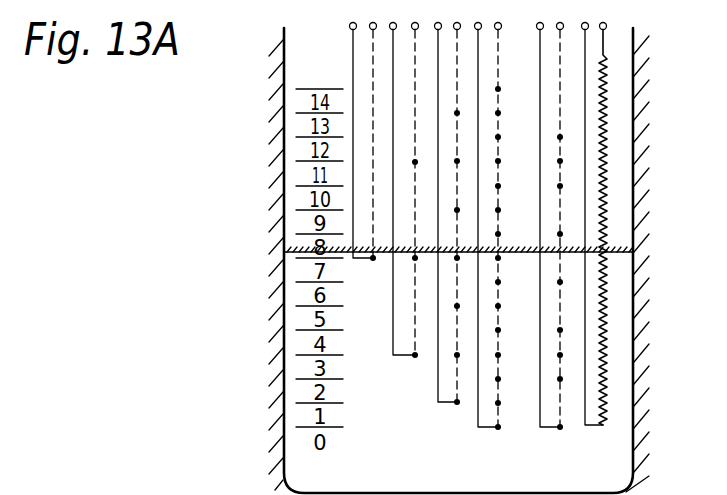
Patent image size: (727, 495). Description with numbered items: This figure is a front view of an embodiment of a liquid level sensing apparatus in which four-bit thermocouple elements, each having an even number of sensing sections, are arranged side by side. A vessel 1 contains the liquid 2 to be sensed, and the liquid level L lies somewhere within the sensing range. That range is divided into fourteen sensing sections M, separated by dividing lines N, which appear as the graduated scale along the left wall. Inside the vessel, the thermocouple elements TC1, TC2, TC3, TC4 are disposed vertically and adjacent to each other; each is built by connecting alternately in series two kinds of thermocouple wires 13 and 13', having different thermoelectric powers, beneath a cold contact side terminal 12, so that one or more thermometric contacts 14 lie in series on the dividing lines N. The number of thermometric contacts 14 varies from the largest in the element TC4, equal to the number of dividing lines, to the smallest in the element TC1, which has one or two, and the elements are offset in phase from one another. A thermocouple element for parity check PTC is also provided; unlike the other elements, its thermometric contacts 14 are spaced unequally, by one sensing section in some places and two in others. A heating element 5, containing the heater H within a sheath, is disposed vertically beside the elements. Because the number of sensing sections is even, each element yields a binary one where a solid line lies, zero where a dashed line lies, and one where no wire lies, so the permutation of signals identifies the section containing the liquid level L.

The vessel 1 is at (283, 338).
The liquid 2 is at (520, 251).
The heating element 5 is at (605, 96).
The cold contact side terminal 12 is at (350, 27).
The thermocouple wire 13 is at (467, 228).
The thermocouple wire 13' is at (345, 59).
The thermometric contact 14 is at (374, 261).
The sensing section M is at (303, 89).
The dividing line N is at (302, 113).
The liquid level L is at (615, 251).
The thermocouple element TC1 is at (362, 15).
The thermocouple element TC2 is at (403, 177).
The thermocouple element TC3 is at (448, 201).
The thermocouple element TC4 is at (491, 213).
The thermocouple element for parity check PTC is at (553, 213).
The heater H is at (594, 212).